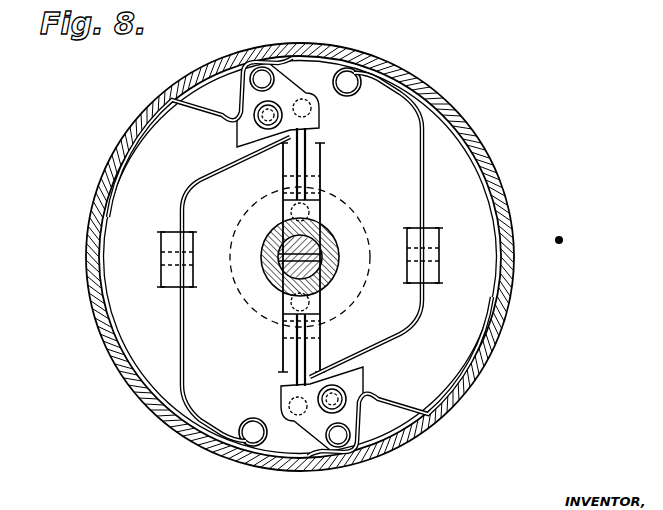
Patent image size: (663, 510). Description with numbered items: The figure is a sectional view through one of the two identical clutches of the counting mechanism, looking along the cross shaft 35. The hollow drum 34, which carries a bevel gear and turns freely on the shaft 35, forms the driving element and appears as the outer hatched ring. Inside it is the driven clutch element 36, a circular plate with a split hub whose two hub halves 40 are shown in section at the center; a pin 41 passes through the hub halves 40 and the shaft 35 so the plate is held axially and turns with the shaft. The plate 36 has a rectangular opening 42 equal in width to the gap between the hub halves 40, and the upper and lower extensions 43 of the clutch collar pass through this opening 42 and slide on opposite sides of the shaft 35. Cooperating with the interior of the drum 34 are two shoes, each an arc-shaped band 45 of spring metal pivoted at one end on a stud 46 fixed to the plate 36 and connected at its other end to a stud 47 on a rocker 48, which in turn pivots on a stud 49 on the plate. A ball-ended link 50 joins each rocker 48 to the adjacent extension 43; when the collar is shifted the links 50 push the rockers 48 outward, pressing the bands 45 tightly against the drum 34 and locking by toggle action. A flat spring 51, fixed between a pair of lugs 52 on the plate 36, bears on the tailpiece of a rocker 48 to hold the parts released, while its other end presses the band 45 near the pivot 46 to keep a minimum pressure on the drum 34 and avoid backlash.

The hollow drum 34 is at (497, 178).
The clutch element 36 is at (494, 227).
The arc-shaped band 45 is at (119, 181).
The cross shaft 35 is at (280, 242).
The pin 41 is at (321, 239).
The hub halves 40 is at (270, 266).
The extensions 43 is at (312, 210).
The rectangular opening 42 is at (323, 176).
The link 50 is at (308, 122).
The stud 47 is at (265, 66).
The rocker 48 is at (280, 103).
The stud 46 is at (351, 68).
The stud 49 is at (238, 122).
The flat spring 51 is at (219, 172).
The lugs 52 is at (180, 287).